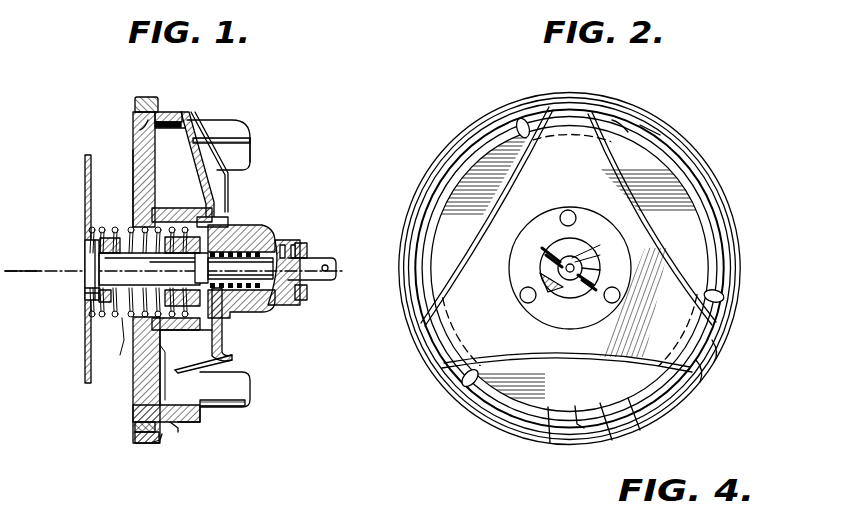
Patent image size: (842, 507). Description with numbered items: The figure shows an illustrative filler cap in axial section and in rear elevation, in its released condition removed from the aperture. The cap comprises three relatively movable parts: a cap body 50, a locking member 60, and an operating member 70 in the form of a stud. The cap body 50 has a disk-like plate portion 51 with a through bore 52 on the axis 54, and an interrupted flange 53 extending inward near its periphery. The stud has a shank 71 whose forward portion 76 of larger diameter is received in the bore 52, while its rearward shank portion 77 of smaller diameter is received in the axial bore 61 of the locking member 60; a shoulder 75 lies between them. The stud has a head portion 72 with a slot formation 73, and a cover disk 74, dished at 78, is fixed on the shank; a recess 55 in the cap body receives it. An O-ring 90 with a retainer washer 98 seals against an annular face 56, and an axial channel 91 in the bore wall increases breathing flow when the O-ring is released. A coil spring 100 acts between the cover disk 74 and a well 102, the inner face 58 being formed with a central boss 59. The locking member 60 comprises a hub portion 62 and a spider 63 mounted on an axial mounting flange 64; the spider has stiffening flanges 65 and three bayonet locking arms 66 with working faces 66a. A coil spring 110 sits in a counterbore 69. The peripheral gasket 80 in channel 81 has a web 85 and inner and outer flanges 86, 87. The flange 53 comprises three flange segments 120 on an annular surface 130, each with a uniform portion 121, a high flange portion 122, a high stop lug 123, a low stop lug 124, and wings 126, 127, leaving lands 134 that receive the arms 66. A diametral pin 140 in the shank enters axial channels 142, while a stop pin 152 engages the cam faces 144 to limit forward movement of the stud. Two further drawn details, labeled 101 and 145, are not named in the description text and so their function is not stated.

In FIG. 1, the cap body 50 is at (132, 128).
In FIG. 2, the cap body 50 is at (718, 173).
In FIG. 1, the disk-like plate portion 51 is at (135, 192).
In FIG. 2, the disk-like plate portion 51 is at (678, 221).
In FIG. 1, the through bore 52 is at (171, 268).
In FIG. 2, the through bore 52 is at (596, 432).
In FIG. 1, the interrupted flange 53 is at (192, 426).
In FIG. 1, the axis 54 is at (30, 270).
In FIG. 2, the axis 54 is at (584, 263).
In FIG. 1, the recess 55 is at (134, 172).
In FIG. 1, the annular face 56 is at (172, 210).
In FIG. 1, the inner face 58 is at (158, 393).
In FIG. 2, the inner face 58 is at (470, 211).
In FIG. 1, the central boss 59 is at (186, 330).
In FIG. 1, the locking member 60 is at (244, 132).
In FIG. 2, the locking member 60 is at (582, 164).
In FIG. 1, the axial bore 61 is at (262, 296).
In FIG. 1, the hub portion 62 is at (258, 232).
In FIG. 2, the hub portion 62 is at (580, 242).
In FIG. 1, the spider 63 is at (229, 207).
In FIG. 1, the axial mounting flange 64 is at (222, 318).
In FIG. 2, the axial mounting flange 64 is at (510, 247).
In FIG. 1, the stiffening flanges 65 is at (213, 158).
In FIG. 2, the stiffening flanges 65 is at (452, 262).
In FIG. 1, the bayonet locking arms 66 is at (188, 122).
In FIG. 2, the bayonet locking arms 66 is at (590, 112).
In FIG. 1, the working faces 66a is at (172, 112).
In FIG. 1, the counterbore 69 is at (226, 222).
In FIG. 1, the operating member 70 is at (112, 273).
In FIG. 2, the operating member 70 is at (580, 250).
In FIG. 1, the shank 71 is at (134, 263).
In FIG. 1, the head portion 72 is at (92, 293).
In FIG. 1, the formation 73 is at (93, 256).
In FIG. 1, the cover disk 74 is at (85, 341).
In FIG. 1, the shoulder 75 is at (196, 268).
In FIG. 1, the forward portion 76 is at (177, 276).
In FIG. 1, the rearward shank portion 77 is at (240, 268).
In FIG. 2, the rearward shank portion 77 is at (604, 274).
In FIG. 1, the dished central portion 78 is at (101, 300).
In FIG. 1, the gasket 80 is at (150, 97).
In FIG. 2, the gasket 80 is at (476, 118).
In FIG. 1, the peripheral channel 81 is at (141, 131).
In FIG. 1, the web 85 is at (137, 437).
In FIG. 2, the web 85 is at (712, 378).
In FIG. 1, the inner flange 86 is at (136, 424).
In FIG. 1, the outer flange 87 is at (150, 445).
In FIG. 2, the outer flange 87 is at (692, 405).
In FIG. 1, the O-ring 90 is at (118, 238).
In FIG. 1, the axial channel 91 is at (195, 278).
In FIG. 1, the retainer washer 98 is at (120, 314).
In FIG. 1, the coil spring 100 is at (122, 352).
In FIG. 1, the flange shoulder 101 is at (226, 224).
In FIG. 1, the well 102 is at (135, 370).
In FIG. 1, the coil spring 110 is at (258, 225).
In FIG. 1, the flange segments 120 is at (253, 150).
In FIG. 2, the flange segments 120 is at (446, 180).
In FIG. 2, the uniform portion 121 is at (468, 165).
In FIG. 2, the high flange portion 122 is at (652, 137).
In FIG. 1, the high stop lug 123 is at (233, 188).
In FIG. 2, the high stop lug 123 is at (655, 170).
In FIG. 2, the low stop lug 124 is at (527, 117).
In FIG. 2, the right hand wing 126 is at (462, 402).
In FIG. 1, the left hand wings 127 is at (228, 122).
In FIG. 2, the left hand wings 127 is at (638, 136).
In FIG. 1, the inner annular surface 130 is at (178, 428).
In FIG. 2, the inner annular surface 130 is at (486, 420).
In FIG. 2, the lands 134 is at (608, 118).
In FIG. 1, the diametral pin 140 is at (285, 235).
In FIG. 1, the axial channels 142 is at (301, 242).
In FIG. 2, the axial channels 142 is at (545, 270).
In FIG. 1, the cam faces 144 is at (308, 295).
In FIG. 2, the cam faces 144 is at (556, 295).
In FIG. 1, the shaft end 145 is at (308, 250).
In FIG. 1, the stop pin 152 is at (308, 247).
In FIG. 2, the stop pin 152 is at (549, 252).